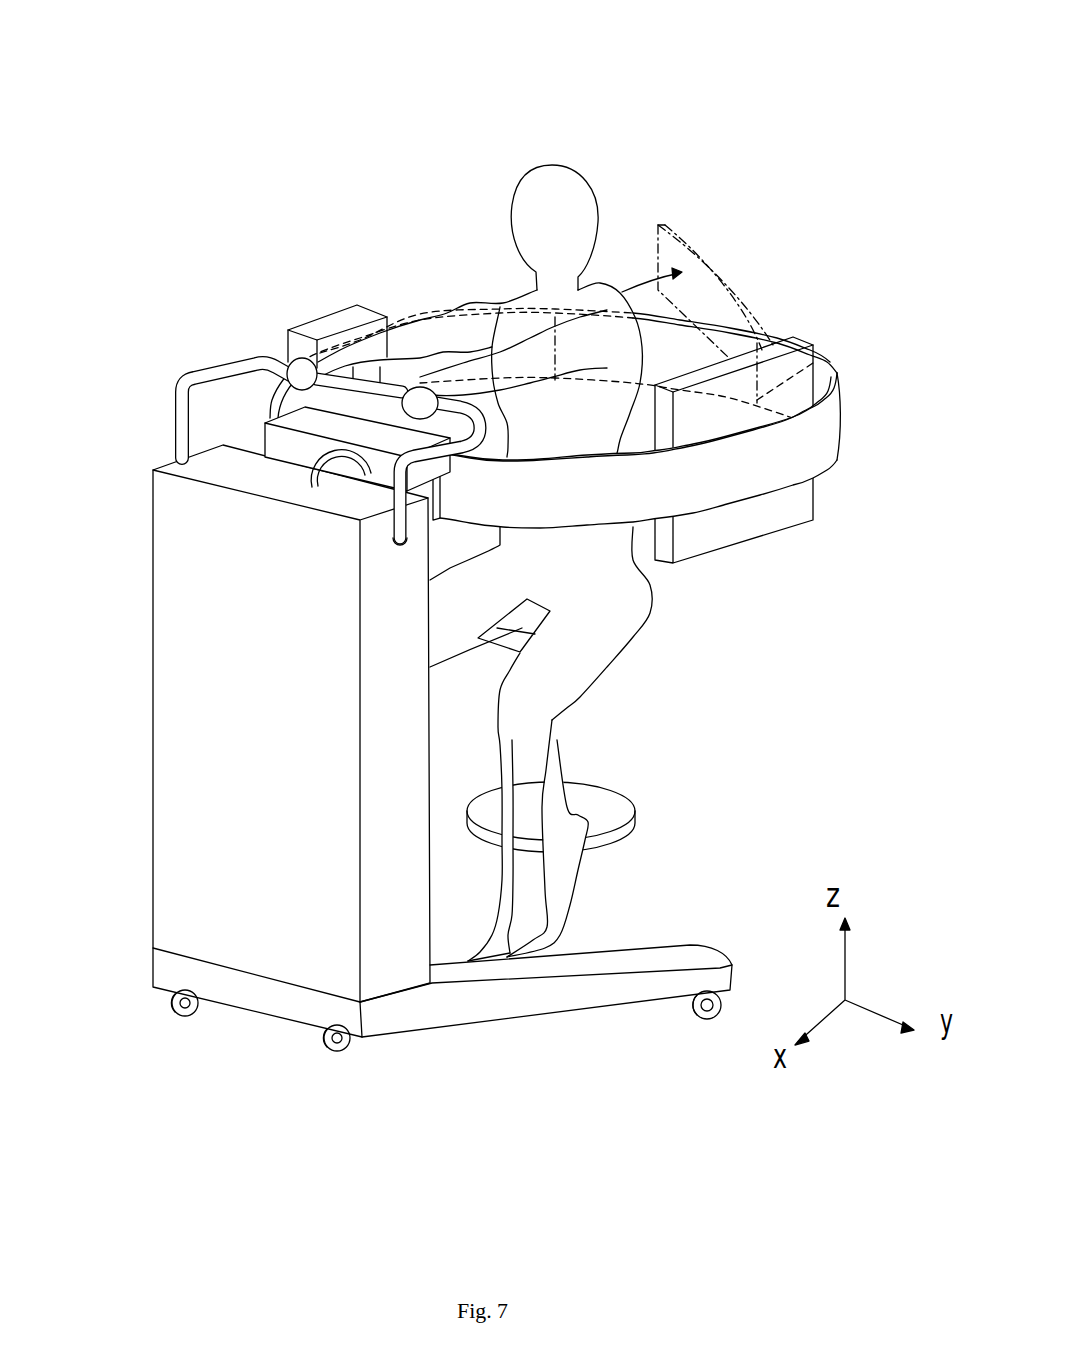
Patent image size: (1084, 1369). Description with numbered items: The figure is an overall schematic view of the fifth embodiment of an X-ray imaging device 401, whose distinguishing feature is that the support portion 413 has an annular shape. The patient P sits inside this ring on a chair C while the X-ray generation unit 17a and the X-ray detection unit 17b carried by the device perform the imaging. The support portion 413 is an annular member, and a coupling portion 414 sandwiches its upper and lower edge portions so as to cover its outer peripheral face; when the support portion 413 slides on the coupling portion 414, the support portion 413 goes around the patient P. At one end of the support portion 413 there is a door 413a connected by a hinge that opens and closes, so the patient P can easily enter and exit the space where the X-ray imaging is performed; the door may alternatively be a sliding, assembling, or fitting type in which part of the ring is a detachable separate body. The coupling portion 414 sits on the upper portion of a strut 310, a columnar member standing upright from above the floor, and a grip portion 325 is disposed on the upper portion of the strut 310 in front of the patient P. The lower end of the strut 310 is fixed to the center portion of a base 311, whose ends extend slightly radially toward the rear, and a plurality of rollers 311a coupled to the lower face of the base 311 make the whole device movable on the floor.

The X-ray imaging device 401 is at (779, 113).
The patient P is at (600, 178).
The X-ray generation unit 17a is at (320, 307).
The X-ray detection unit 17b is at (793, 373).
The door 413a is at (717, 272).
The support portion 413 is at (710, 482).
The coupling portion 414 is at (300, 443).
The grip portion 325 is at (193, 378).
The strut 310 is at (270, 892).
The base 311 is at (548, 988).
The rollers 311a is at (340, 1040).
The chair C is at (633, 817).